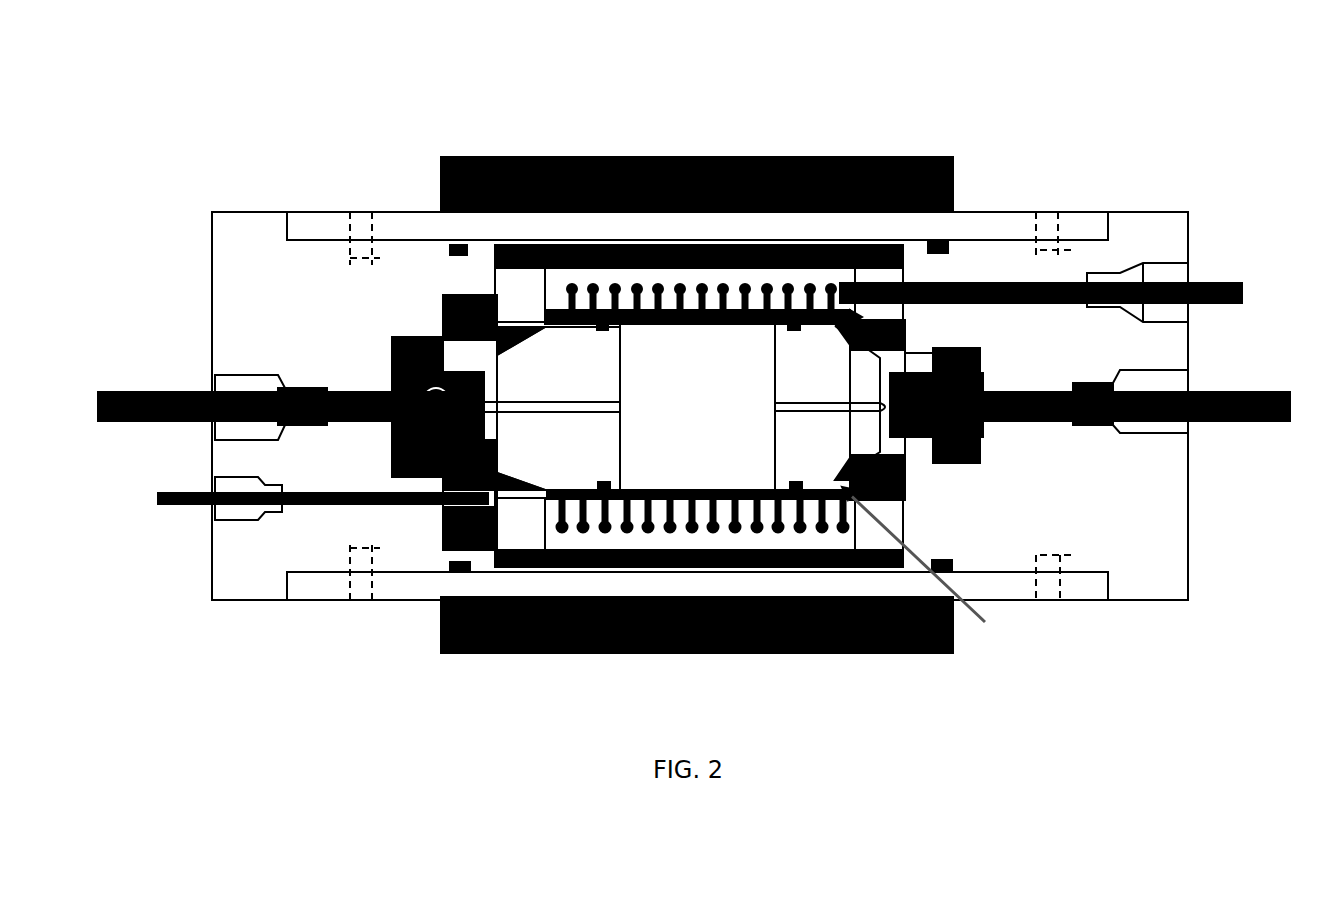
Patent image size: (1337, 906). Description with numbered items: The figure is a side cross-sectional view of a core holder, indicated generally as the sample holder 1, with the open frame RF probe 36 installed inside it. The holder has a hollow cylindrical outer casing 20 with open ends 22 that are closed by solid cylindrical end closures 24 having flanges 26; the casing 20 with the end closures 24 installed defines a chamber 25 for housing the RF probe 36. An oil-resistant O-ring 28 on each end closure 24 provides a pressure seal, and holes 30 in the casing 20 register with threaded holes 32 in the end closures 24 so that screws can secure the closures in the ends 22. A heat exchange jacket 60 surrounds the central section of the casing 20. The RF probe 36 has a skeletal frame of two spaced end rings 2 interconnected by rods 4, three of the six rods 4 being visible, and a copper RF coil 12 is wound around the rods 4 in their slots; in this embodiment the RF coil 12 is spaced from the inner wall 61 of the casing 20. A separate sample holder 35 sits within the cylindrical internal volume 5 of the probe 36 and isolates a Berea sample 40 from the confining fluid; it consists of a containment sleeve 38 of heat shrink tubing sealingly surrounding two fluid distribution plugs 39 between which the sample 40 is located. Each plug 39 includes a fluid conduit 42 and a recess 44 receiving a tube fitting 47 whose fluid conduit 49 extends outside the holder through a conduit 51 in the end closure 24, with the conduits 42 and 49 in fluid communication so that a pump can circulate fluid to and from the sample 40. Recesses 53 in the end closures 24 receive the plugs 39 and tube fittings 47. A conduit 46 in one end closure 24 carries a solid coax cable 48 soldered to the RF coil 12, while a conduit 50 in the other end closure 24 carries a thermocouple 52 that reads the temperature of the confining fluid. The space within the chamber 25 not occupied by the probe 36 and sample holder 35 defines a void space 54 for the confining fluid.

The sample holder 1 is at (575, 119).
The end rings 2 is at (518, 290).
The rods 4 is at (623, 320).
The cylindrical internal volume 5 is at (745, 265).
The RF coil 12 is at (575, 285).
The outer casing 20 is at (1005, 212).
The open ends 22 is at (1098, 238).
The end closures 24 is at (320, 342).
The chamber 25 is at (860, 157).
The flanges 26 is at (240, 212).
The O-ring 28 is at (605, 483).
The holes 30 is at (362, 238).
The threaded holes 32 is at (372, 255).
The sample holder 35 is at (938, 584).
The RF probe 36 is at (744, 543).
The containment sleeve 38 is at (835, 328).
The fluid distribution plugs 39 is at (540, 442).
The sample 40 is at (692, 440).
The fluid conduit 42 is at (565, 405).
The recess 44 is at (468, 376).
The conduit 46 is at (1165, 303).
The tube fitting 47 is at (418, 398).
The solid coax cable 48 is at (1250, 292).
The fluid conduit 49 is at (98, 407).
The conduit 50 is at (215, 488).
The conduits 51 is at (225, 388).
The thermocouple 52 is at (160, 503).
The recesses 53 is at (407, 345).
The void space 54 is at (697, 157).
The heat exchange jacket 60 is at (735, 653).
The inner wall 61 is at (833, 262).